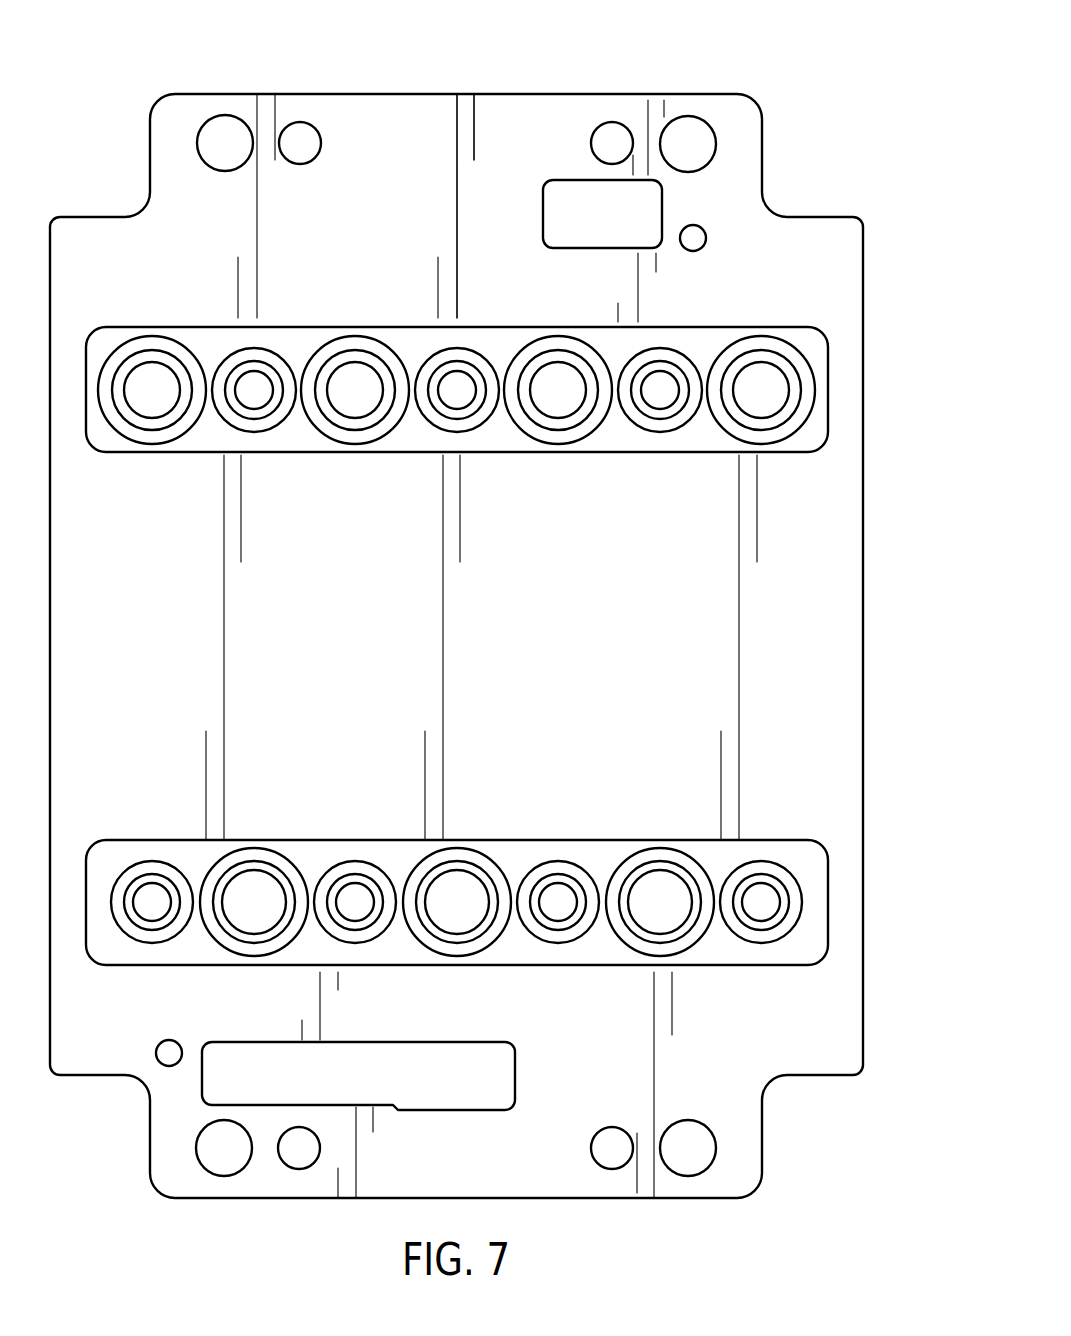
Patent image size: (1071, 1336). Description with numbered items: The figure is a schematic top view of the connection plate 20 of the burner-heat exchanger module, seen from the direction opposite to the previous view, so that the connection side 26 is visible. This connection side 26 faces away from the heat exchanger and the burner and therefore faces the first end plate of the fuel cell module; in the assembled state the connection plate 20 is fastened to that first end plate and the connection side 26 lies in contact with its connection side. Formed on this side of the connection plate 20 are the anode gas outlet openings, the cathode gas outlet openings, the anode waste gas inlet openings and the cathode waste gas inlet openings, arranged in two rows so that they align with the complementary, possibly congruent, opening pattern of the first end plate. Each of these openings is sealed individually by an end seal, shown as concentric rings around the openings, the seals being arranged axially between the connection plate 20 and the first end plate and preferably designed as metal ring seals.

The connection plate 20 is at (752, 74).
The connection side 26 is at (490, 150).